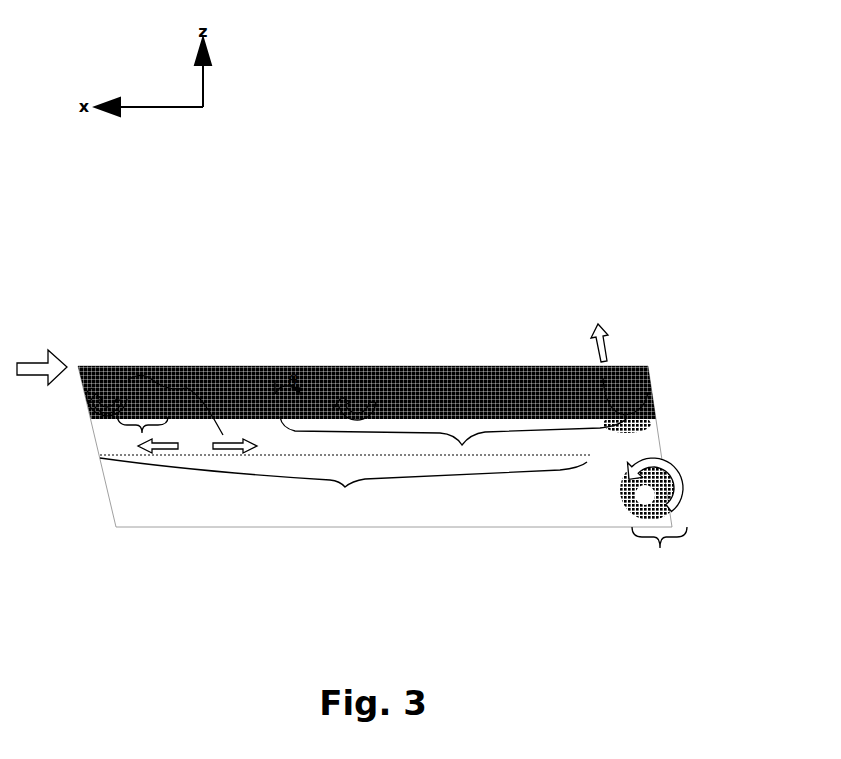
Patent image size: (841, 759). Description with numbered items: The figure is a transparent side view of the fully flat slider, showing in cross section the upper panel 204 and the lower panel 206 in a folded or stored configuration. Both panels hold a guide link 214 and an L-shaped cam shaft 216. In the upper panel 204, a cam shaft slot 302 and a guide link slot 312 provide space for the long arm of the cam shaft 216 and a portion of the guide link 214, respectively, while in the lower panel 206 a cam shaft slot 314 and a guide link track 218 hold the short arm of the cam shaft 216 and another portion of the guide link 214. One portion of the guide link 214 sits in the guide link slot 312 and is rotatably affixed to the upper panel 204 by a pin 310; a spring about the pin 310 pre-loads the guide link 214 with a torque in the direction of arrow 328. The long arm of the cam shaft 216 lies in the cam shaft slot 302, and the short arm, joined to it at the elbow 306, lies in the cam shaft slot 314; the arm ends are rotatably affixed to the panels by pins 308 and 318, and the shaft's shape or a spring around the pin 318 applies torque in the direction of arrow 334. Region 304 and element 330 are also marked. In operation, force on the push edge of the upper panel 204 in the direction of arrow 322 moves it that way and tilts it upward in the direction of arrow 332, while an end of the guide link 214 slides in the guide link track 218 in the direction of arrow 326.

The upper panel 204 is at (663, 366).
The lower panel 206 is at (693, 418).
The guide link 214 is at (137, 413).
The cam shaft 216 is at (444, 393).
The guide link track 218 is at (345, 487).
The cam shaft slot 302 is at (462, 445).
The domain wall 304 is at (142, 433).
The elbow 306 is at (623, 372).
The pin 308 is at (357, 395).
The pin 310 is at (106, 395).
The guide link slot 312 is at (187, 388).
The cam shaft slot 314 is at (659, 552).
The pin 318 is at (643, 500).
The arrow 322 is at (34, 362).
The arrow 326 is at (230, 445).
The arrow 328 is at (100, 411).
The rotation 330 is at (376, 408).
The arrow 332 is at (594, 343).
The arrow 334 is at (677, 509).